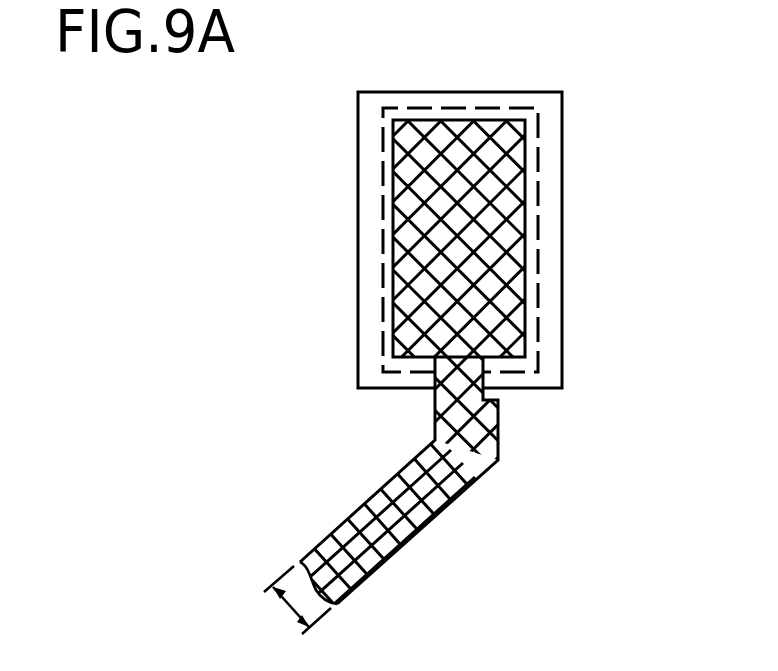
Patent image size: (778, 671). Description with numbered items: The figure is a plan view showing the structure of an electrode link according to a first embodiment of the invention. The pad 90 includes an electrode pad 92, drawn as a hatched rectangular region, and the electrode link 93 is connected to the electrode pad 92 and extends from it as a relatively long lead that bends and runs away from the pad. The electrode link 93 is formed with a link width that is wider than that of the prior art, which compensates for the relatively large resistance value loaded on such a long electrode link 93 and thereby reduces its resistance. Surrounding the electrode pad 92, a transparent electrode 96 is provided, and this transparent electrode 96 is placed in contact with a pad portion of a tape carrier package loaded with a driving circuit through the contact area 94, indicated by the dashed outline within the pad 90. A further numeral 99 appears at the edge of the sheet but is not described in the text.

The pad 90 is at (488, 194).
The electrode pad 92 is at (525, 287).
The electrode link 93 is at (497, 442).
The contact area 94 is at (538, 337).
The transparent electrode 96 is at (380, 249).
The adjacent element 99 is at (649, 664).